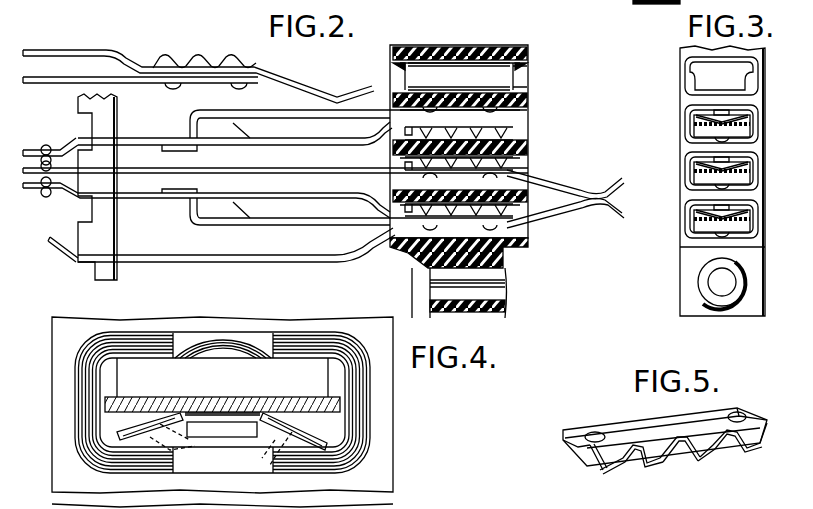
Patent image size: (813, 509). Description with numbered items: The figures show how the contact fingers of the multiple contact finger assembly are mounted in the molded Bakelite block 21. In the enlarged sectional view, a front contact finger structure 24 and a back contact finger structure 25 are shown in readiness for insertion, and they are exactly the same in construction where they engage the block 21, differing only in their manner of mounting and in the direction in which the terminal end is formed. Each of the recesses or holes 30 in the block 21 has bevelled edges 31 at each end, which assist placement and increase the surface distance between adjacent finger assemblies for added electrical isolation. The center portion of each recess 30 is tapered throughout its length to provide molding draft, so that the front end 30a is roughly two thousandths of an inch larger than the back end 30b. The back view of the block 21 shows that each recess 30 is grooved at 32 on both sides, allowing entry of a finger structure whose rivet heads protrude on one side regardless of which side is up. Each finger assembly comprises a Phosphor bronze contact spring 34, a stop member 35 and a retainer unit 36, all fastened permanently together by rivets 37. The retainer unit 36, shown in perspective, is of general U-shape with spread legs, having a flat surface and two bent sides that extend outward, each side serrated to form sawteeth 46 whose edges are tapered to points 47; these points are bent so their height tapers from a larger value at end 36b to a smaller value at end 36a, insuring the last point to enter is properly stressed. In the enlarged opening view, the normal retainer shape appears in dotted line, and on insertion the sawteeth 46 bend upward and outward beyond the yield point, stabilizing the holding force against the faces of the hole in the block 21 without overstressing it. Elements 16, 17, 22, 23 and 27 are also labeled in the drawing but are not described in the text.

In FIG. 2, the cable 16 is at (218, 0).
In FIG. 2, the cable 17 is at (562, 8).
In FIG. 2, the molded block 21 is at (405, 250).
In FIG. 3, the molded block 21 is at (683, 287).
In FIG. 4, the molded block 21 is at (393, 460).
In FIG. 2, the insulating block 22 is at (95, 275).
In FIG. 2, the contact strip 23 is at (120, 170).
In FIG. 2, the front contact finger structure 24 is at (120, 140).
In FIG. 2, the back contact finger structure 25 is at (58, 48).
In FIG. 2, the contact strip 27 is at (145, 260).
In FIG. 2, the recess 30 is at (446, 70).
In FIG. 3, the recess 30 is at (700, 78).
In FIG. 2, the front end of hole 30a is at (405, 73).
In FIG. 2, the back end of hole 30b is at (528, 83).
In FIG. 2, the bevelled edges 31 is at (393, 67).
In FIG. 3, the groove 32 is at (718, 58).
In FIG. 4, the contact spring 34 is at (337, 405).
In FIG. 4, the stop member 35 is at (174, 368).
In FIG. 4, the retainer unit 36 is at (330, 428).
In FIG. 5, the retainer unit 36 is at (637, 423).
In FIG. 5, the end of retainer unit 36a is at (753, 413).
In FIG. 5, the end of retainer unit 36b is at (563, 443).
In FIG. 4, the rivets 37 is at (237, 347).
In FIG. 5, the sawteeth 46 is at (645, 456).
In FIG. 5, the points 47 is at (578, 450).